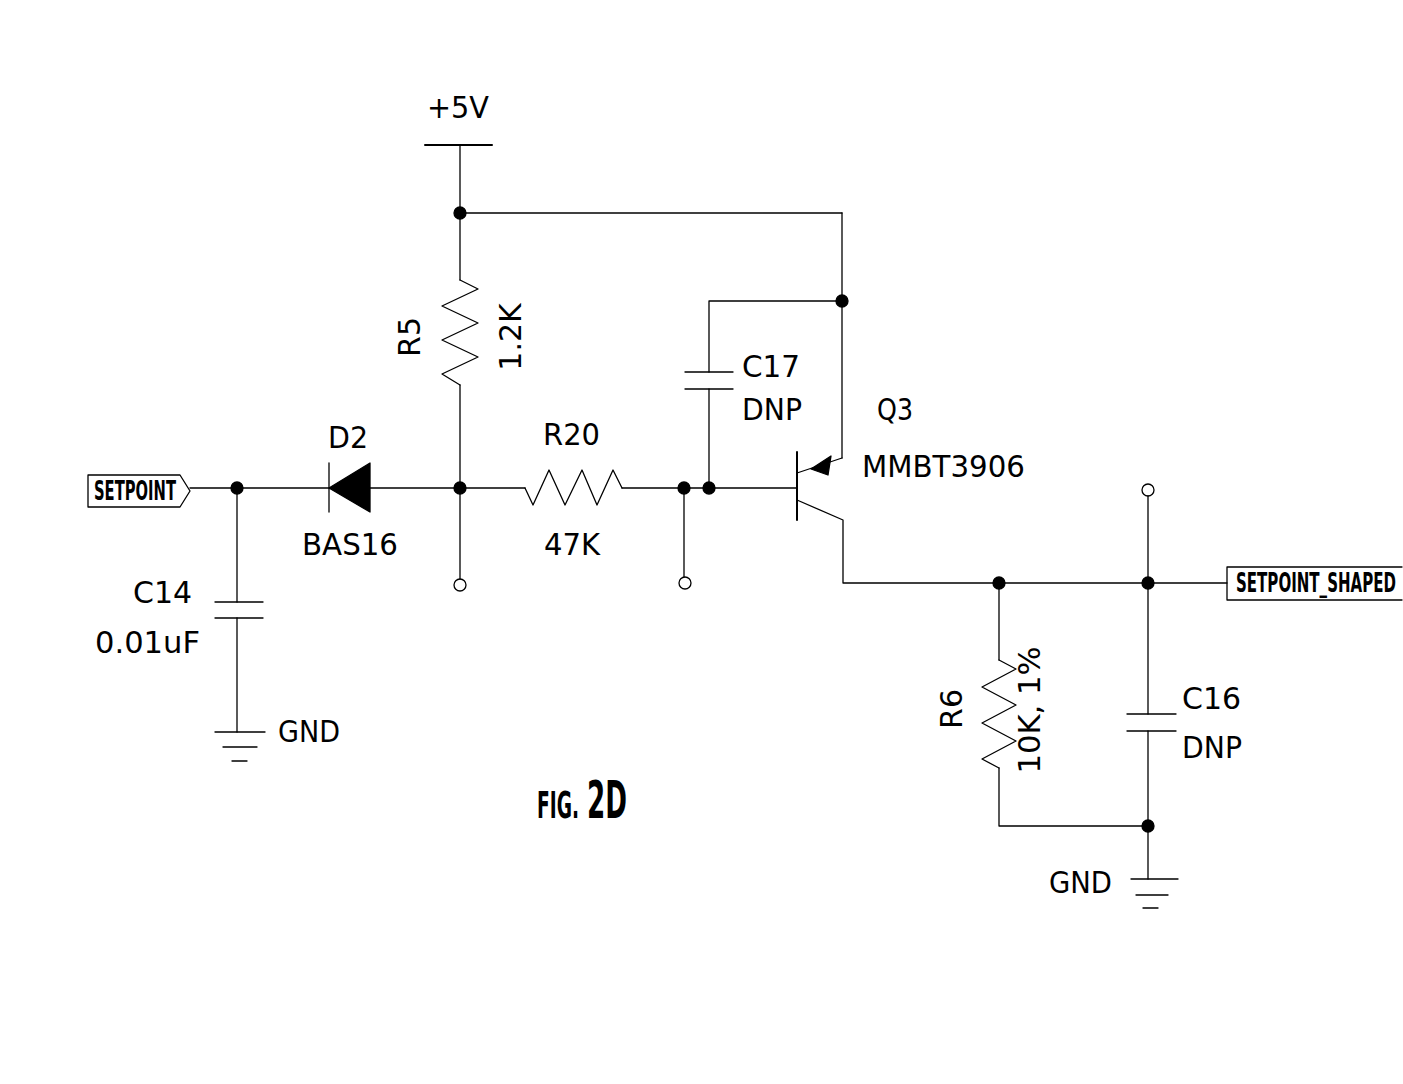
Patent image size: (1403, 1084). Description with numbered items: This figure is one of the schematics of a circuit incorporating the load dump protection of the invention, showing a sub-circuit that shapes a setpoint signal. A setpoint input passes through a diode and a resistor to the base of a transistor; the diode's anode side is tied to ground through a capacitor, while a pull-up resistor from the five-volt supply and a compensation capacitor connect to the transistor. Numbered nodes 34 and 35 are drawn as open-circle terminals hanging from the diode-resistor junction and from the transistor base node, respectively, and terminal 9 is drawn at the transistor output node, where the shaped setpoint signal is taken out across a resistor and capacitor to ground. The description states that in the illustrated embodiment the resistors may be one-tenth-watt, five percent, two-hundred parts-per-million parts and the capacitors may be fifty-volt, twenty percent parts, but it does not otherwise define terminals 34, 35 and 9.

The test point terminal 34 is at (461, 567).
The test point terminal 35 is at (686, 567).
The setpoint shaped output node 9 is at (1150, 507).